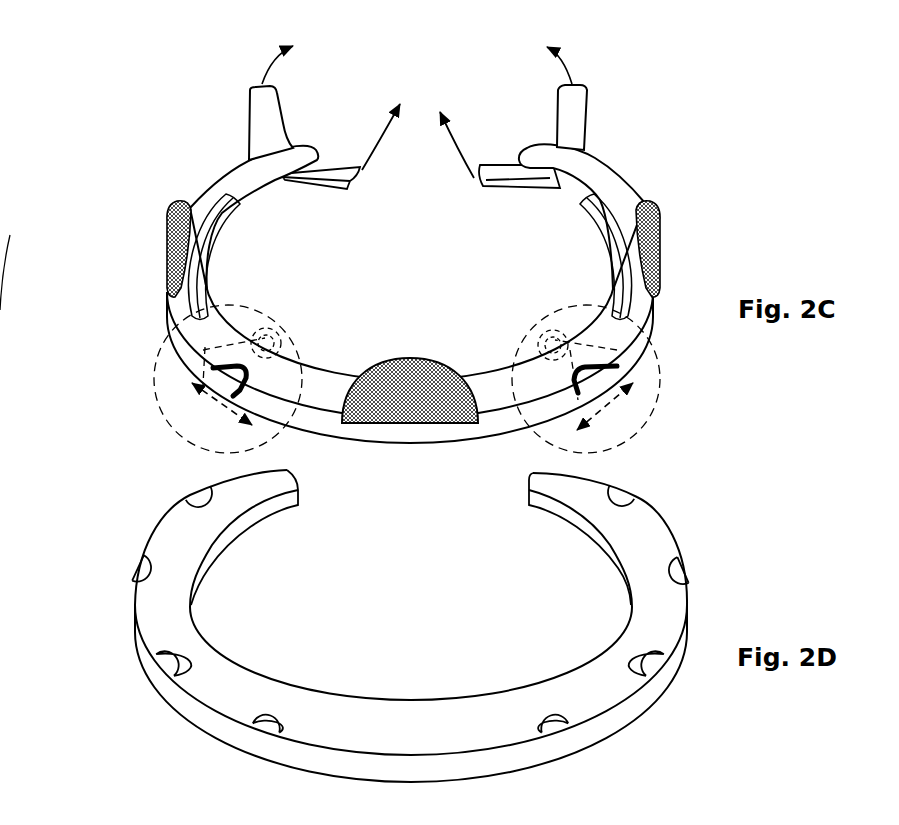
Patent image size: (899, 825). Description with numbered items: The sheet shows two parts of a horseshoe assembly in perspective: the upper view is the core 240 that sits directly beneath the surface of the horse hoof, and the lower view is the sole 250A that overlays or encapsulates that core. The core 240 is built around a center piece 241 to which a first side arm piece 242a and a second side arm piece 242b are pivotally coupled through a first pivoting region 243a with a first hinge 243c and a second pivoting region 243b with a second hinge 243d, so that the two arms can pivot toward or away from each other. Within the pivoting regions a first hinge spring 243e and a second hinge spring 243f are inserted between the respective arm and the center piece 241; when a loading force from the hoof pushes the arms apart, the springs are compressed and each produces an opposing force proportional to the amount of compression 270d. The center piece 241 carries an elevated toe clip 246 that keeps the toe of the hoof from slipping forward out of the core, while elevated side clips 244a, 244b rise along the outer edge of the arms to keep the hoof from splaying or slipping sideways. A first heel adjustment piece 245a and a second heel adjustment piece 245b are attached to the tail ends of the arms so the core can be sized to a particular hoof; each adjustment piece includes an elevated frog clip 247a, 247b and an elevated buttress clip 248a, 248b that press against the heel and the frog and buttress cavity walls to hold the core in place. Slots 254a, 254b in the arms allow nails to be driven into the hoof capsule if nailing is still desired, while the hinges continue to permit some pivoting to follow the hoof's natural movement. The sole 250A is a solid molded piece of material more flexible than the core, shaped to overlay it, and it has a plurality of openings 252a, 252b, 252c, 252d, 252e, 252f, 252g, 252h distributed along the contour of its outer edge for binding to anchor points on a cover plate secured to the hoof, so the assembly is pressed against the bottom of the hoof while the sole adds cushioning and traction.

In FIG. 2C, the core 240 is at (104, 218).
In FIG. 2C, the center piece 241 is at (463, 441).
In FIG. 2C, the first side arm piece 242a is at (610, 285).
In FIG. 2C, the second side arm piece 242b is at (210, 287).
In FIG. 2C, the first pivoting region 243a is at (652, 352).
In FIG. 2C, the second pivoting region 243b is at (200, 350).
In FIG. 2C, the first hinge 243c is at (556, 330).
In FIG. 2C, the second hinge 243d is at (281, 336).
In FIG. 2C, the first hinge spring 243e is at (620, 367).
In FIG. 2C, the second hinge spring 243f is at (212, 369).
In FIG. 2C, the elevated side clip 244a is at (651, 203).
In FIG. 2C, the elevated side clip 244b is at (178, 200).
In FIG. 2C, the first heel adjustment piece 245a is at (580, 172).
In FIG. 2C, the second heel adjustment piece 245b is at (258, 168).
In FIG. 2C, the elevated toe clip 246 is at (408, 360).
In FIG. 2C, the first frog clip 247a is at (476, 188).
In FIG. 2C, the second frog clip 247b is at (356, 190).
In FIG. 2C, the first buttress clip 248a is at (585, 87).
In FIG. 2C, the second buttress clip 248b is at (255, 88).
In FIG. 2C, the slot 254a is at (608, 216).
In FIG. 2C, the slot 254b is at (218, 226).
In FIG. 2C, the amount of compression 270d is at (217, 406).
In FIG. 2D, the sole 250A is at (470, 698).
In FIG. 2D, the opening 252a is at (200, 498).
In FIG. 2D, the opening 252b is at (143, 566).
In FIG. 2D, the opening 252c is at (168, 662).
In FIG. 2D, the opening 252d is at (267, 730).
In FIG. 2D, the opening 252e is at (557, 730).
In FIG. 2D, the opening 252f is at (652, 668).
In FIG. 2D, the opening 252g is at (675, 572).
In FIG. 2D, the opening 252h is at (622, 500).